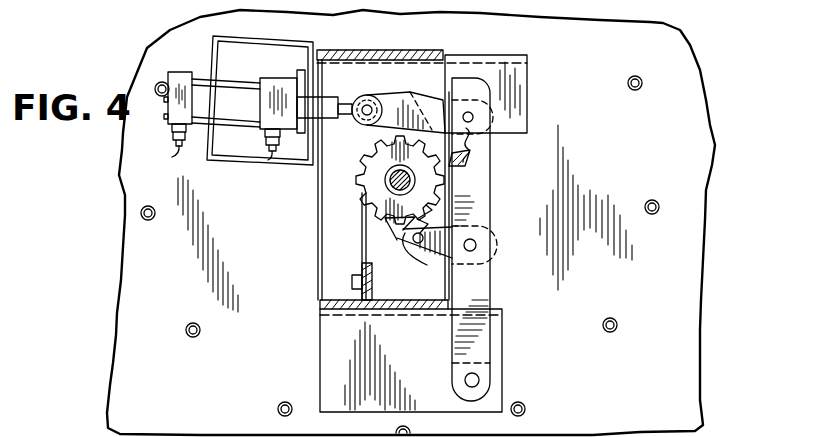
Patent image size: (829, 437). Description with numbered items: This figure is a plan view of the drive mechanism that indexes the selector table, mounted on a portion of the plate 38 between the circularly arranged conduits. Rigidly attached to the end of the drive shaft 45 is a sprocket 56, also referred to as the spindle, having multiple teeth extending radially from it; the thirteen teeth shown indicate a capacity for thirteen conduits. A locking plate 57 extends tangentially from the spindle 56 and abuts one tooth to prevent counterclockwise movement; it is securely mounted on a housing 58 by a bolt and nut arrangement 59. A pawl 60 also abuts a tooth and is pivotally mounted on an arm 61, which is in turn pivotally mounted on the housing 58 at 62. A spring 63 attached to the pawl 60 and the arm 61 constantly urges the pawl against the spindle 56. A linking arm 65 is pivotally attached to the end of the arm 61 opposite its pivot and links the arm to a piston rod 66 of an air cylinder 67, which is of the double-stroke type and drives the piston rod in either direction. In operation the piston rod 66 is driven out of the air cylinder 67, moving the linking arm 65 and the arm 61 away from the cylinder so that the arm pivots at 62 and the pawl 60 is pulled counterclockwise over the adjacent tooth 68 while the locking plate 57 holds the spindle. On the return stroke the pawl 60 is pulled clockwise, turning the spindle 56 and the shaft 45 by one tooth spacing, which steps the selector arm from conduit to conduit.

The plate 38 is at (646, 368).
The drive shaft 45 is at (388, 180).
The sprocket 56 is at (368, 163).
The locking plate 57 is at (362, 230).
The housing 58 is at (327, 342).
The bolt and nut arrangement 59 is at (354, 273).
The pawl 60 is at (408, 245).
The arm 61 is at (478, 282).
The pivot 62 is at (479, 380).
The spring 63 is at (475, 151).
The linking arm 65 is at (402, 107).
The piston rod 66 is at (327, 105).
The air cylinder 67 is at (207, 77).
The adjacent tooth 68 is at (405, 243).